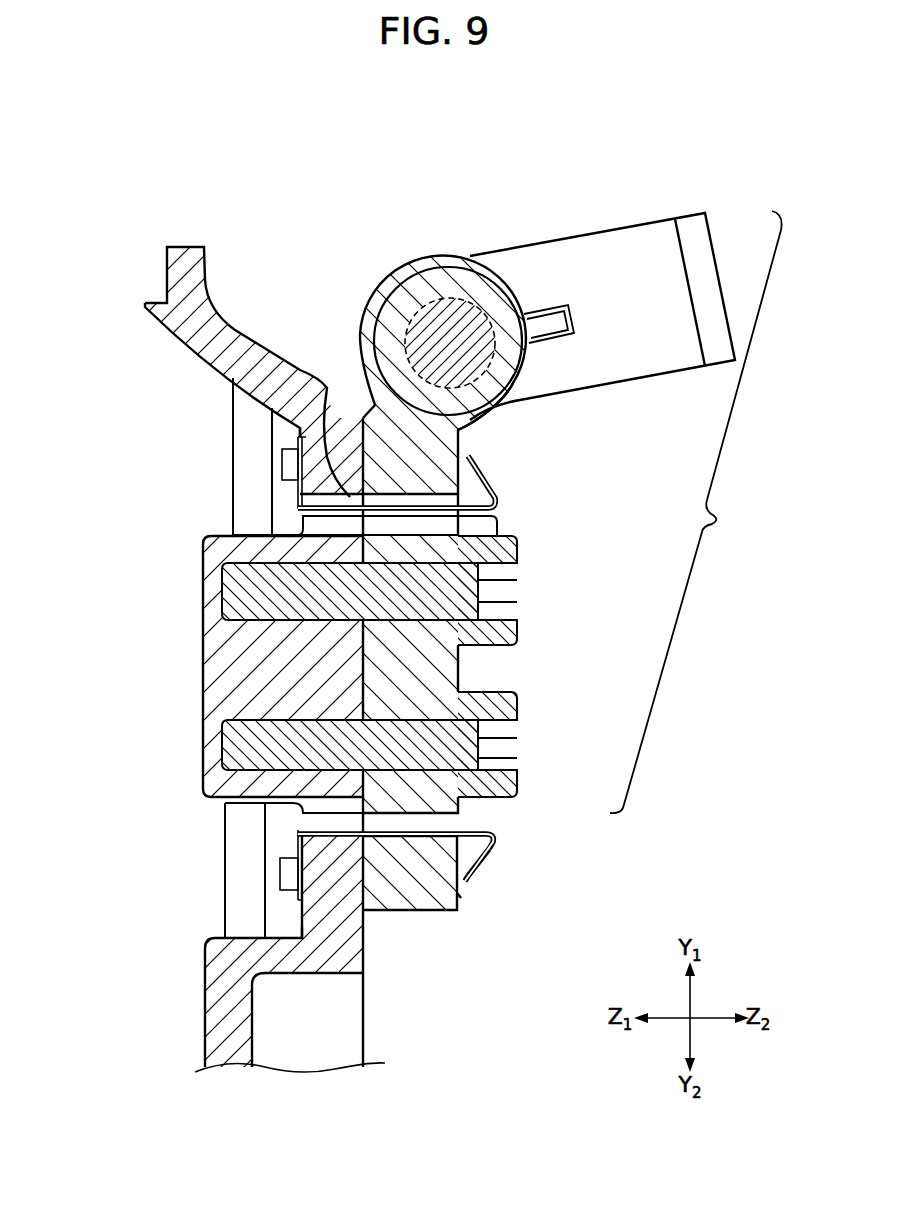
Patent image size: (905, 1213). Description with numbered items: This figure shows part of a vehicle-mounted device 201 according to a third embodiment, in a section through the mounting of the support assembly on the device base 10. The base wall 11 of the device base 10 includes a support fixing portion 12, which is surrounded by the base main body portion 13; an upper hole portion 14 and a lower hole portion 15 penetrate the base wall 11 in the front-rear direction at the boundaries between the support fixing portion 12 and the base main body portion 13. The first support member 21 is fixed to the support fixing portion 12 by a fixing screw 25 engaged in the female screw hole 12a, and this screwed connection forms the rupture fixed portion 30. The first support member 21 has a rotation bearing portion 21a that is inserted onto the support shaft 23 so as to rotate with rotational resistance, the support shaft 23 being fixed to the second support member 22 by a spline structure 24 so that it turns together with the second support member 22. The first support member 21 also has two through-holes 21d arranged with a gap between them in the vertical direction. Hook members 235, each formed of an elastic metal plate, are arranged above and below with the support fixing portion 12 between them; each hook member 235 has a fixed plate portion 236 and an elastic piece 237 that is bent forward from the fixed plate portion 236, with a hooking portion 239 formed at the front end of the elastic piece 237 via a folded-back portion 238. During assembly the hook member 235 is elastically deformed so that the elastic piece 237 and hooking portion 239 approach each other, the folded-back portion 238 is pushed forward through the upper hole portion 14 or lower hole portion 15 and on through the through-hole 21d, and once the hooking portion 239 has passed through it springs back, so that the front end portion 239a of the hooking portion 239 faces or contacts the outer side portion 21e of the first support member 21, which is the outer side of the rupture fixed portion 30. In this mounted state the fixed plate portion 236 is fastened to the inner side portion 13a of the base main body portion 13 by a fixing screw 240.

The device base 10 is at (286, 625).
The base wall 11 is at (240, 338).
The support fixing portion 12 is at (220, 686).
The female screw hole 12a is at (218, 590).
The base main body portion 13 is at (318, 472).
The inner side portion 13a is at (298, 433).
The upper hole portion 14 is at (303, 520).
The lower hole portion 15 is at (310, 823).
The first support member 21 is at (448, 579).
The rotation bearing portion 21a is at (410, 300).
The through-holes 21d is at (392, 498).
The outer side portion 21e is at (512, 392).
The second support member 22 is at (638, 250).
The support shaft 23 is at (457, 298).
The spline structure 24 is at (547, 320).
The fixing screw 25 is at (505, 702).
The rupture fixed portion 30 is at (696, 512).
The vehicle-mounted device 201 is at (496, 164).
The hook member 235 is at (286, 493).
The fixed plate portion 236 is at (297, 441).
The elastic piece 237 is at (447, 511).
The folded-back portion 238 is at (494, 498).
The hooking portion 239 is at (492, 485).
The front end portion 239a is at (470, 454).
The fixing screw 240 is at (290, 467).